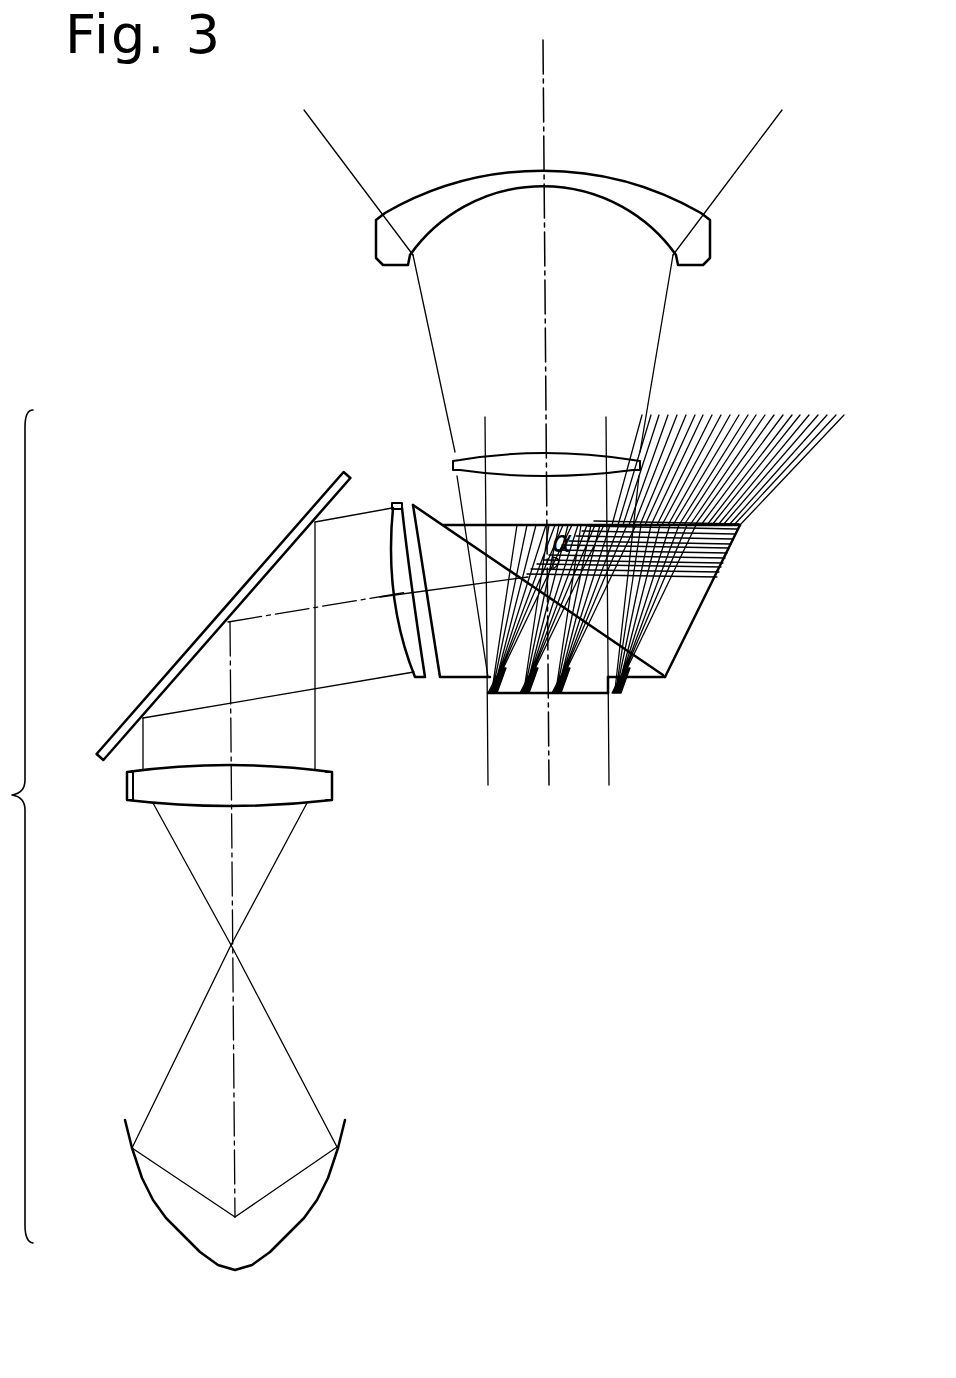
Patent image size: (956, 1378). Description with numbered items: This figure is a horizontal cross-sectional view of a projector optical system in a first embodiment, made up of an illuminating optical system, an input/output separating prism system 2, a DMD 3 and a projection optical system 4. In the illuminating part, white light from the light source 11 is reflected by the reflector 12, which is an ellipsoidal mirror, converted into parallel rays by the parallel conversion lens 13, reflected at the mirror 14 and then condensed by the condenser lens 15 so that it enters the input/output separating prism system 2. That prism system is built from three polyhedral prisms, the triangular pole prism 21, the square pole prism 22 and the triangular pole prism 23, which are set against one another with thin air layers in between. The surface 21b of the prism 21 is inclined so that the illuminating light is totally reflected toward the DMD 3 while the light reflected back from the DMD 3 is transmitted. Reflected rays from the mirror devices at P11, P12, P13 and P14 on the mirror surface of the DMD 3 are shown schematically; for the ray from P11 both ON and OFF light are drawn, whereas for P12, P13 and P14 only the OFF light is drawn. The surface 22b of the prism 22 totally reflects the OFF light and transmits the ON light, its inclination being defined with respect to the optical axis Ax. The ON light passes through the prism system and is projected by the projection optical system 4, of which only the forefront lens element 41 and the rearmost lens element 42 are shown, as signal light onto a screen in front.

The optical axis Ax is at (546, 58).
The projection optical system 4 is at (262, 204).
The forefront lens element 41 is at (375, 235).
The rearmost lens element 42 is at (458, 462).
The input/output separating prism system 2 is at (728, 585).
The triangular pole prism 23 is at (528, 540).
The square pole prism 22 is at (643, 511).
The surface of the prism 22 22b is at (622, 520).
The triangular pole prism 21 is at (627, 652).
The surface of the prism 21 21b is at (648, 678).
The DMD 3 is at (477, 691).
The mirror device position P11 is at (479, 702).
The mirror device position P12 is at (512, 693).
The mirror device position P13 is at (553, 693).
The mirror device position P14 is at (610, 693).
The condenser lens 15 is at (393, 503).
The mirror 14 is at (143, 690).
The parallel conversion lens 13 is at (127, 790).
The reflector 12 is at (135, 1168).
The light source 11 is at (235, 1217).